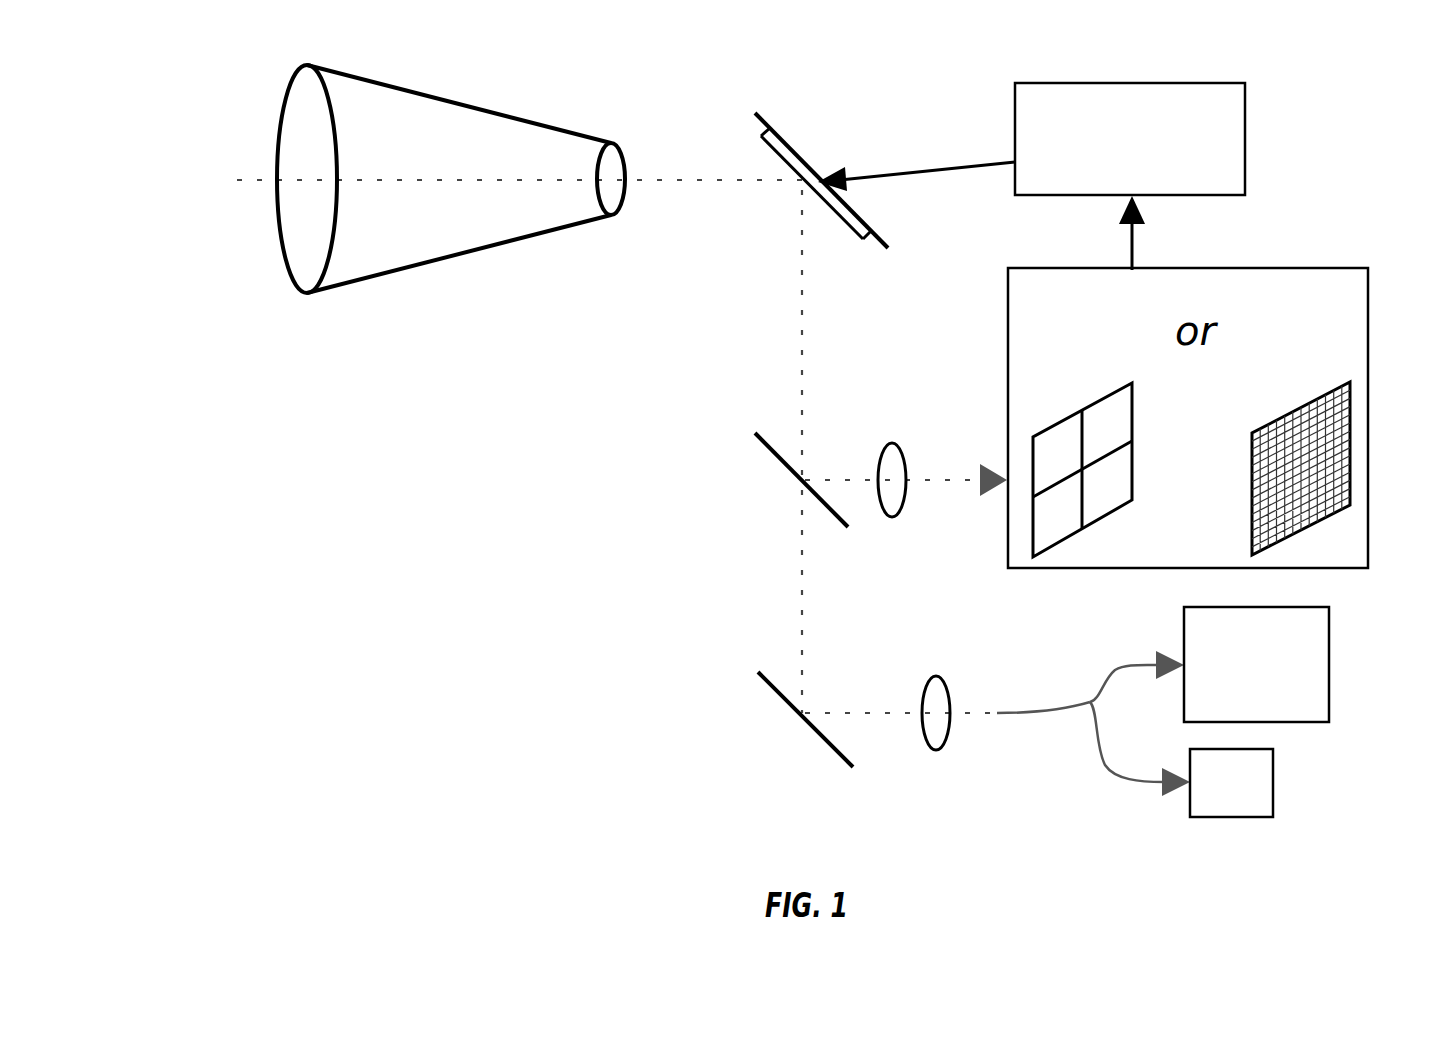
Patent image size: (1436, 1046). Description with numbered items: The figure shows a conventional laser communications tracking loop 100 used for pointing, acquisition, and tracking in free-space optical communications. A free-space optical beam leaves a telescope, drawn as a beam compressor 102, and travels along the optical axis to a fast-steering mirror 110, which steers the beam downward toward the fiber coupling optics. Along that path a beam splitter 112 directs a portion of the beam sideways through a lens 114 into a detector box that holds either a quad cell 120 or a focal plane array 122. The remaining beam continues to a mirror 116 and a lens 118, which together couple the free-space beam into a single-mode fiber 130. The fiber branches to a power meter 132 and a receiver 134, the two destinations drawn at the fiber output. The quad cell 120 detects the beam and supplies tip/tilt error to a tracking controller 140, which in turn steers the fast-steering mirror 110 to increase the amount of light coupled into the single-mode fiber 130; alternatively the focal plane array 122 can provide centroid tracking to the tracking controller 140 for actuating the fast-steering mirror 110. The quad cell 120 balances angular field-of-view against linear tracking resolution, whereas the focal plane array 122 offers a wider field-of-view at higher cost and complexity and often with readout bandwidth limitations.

The lasercom tracking loop 100 is at (217, 612).
The telescope (beam compressor) 102 is at (458, 228).
The fast-steering mirror 110 is at (858, 125).
The beam splitter 112 is at (748, 498).
The lens 114 is at (891, 480).
The mirror 116 is at (766, 736).
The lens 118 is at (935, 714).
The quad cell 120 is at (1097, 423).
The focal plane array (FPA) 122 is at (1344, 435).
The single-mode fiber (SMF) 130 is at (1093, 731).
The power meter 132 is at (1292, 664).
The receiver 134 is at (1265, 783).
The tracking controller 140 is at (1068, 176).